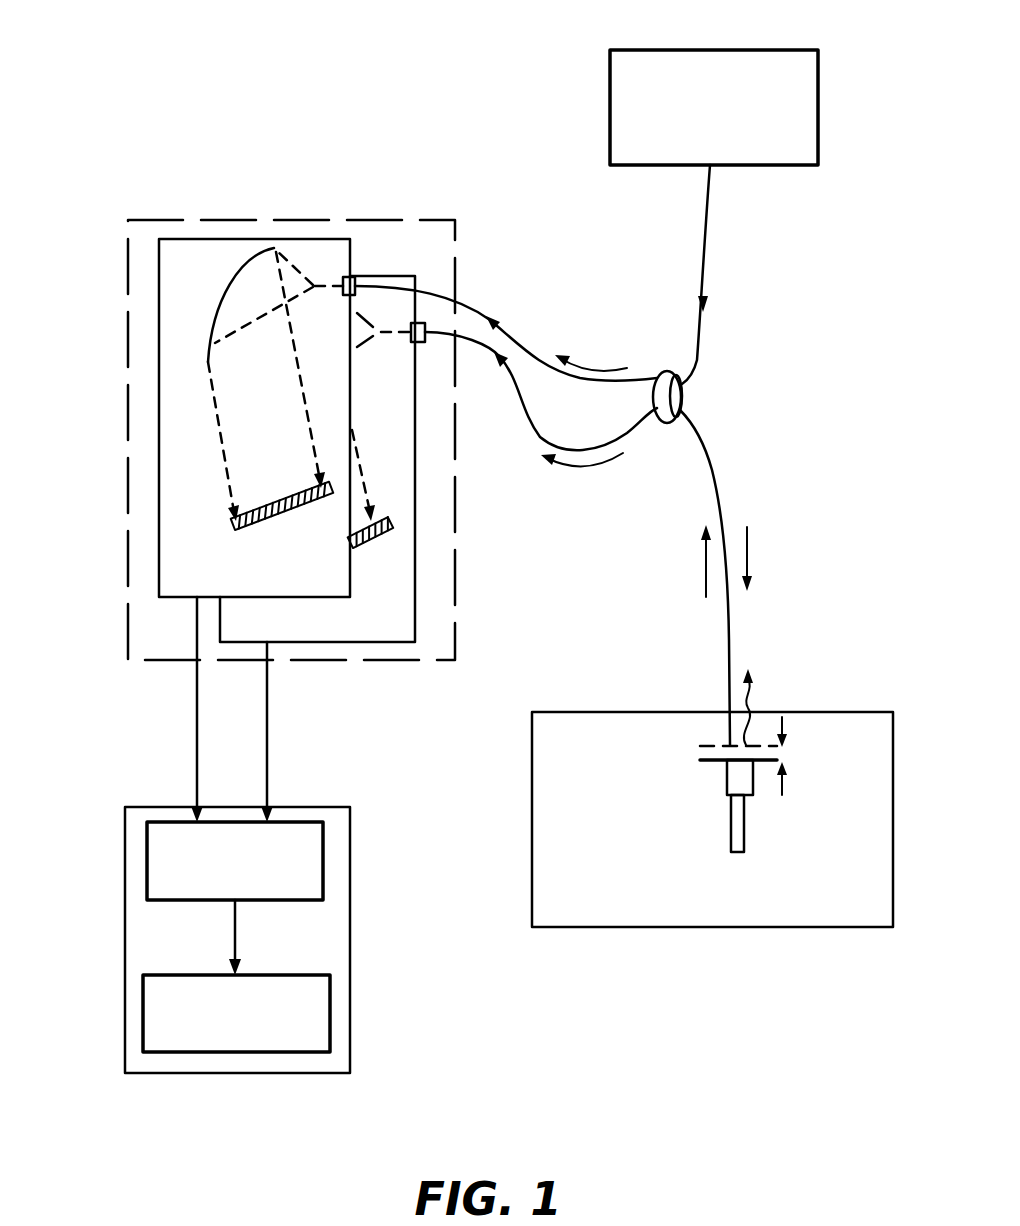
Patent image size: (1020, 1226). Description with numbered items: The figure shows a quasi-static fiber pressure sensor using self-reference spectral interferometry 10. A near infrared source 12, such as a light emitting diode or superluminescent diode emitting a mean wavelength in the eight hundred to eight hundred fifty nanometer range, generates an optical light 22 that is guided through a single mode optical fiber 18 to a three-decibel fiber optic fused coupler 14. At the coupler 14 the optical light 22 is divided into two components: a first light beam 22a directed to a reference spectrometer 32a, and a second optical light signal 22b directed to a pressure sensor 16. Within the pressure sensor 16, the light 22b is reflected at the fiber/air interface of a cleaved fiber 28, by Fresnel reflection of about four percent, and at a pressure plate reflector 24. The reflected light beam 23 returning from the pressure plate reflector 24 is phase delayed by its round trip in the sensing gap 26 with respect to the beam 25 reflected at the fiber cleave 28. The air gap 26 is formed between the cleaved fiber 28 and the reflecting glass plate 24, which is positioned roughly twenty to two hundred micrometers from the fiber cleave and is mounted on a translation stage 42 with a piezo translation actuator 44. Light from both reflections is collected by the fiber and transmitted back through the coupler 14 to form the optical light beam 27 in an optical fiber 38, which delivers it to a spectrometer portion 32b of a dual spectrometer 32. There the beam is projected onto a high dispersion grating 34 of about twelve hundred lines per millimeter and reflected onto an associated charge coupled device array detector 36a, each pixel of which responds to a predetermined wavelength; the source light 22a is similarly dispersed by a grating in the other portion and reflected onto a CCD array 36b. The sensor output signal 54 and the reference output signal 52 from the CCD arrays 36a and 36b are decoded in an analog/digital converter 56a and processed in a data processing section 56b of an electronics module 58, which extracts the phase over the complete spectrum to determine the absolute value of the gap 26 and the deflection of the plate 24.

The quasi-static fiber pressure sensor using self-reference spectral interferometry 10 is at (418, 71).
The near infrared source 12 is at (818, 95).
The 3 dB fiber optic fused coupler 14 is at (670, 371).
The pressure sensor 16 is at (603, 712).
The single mode optical fiber 18 is at (698, 344).
The optical light 22 is at (718, 289).
The first light beam 22a is at (593, 462).
The second optical light signal 22b is at (749, 565).
The reflected light beam 23 is at (706, 565).
The pressure plate reflector 24 is at (710, 763).
The beam reflected at the fiber cleave 25 is at (749, 694).
The sensing gap 26 is at (778, 757).
The optical light beam 27 is at (604, 368).
The cleaved fiber 28 is at (513, 418).
The dual spectrometer 32 is at (128, 415).
The reference spectrometer 32a is at (403, 308).
The spectrometer portion 32b is at (350, 253).
The high dispersion grating 34 is at (241, 263).
The charge coupled device array detector 36a is at (306, 492).
The CCD array 36b is at (378, 551).
The optical fiber 38 is at (510, 344).
The translation stage 42 is at (744, 818).
The piezo translation actuator 44 is at (727, 782).
The reference output signal 52 is at (267, 757).
The sensor output signal 54 is at (197, 710).
The analog/digital converter 56a is at (323, 857).
The data processing section 56b is at (330, 1007).
The electronics module 58 is at (125, 993).